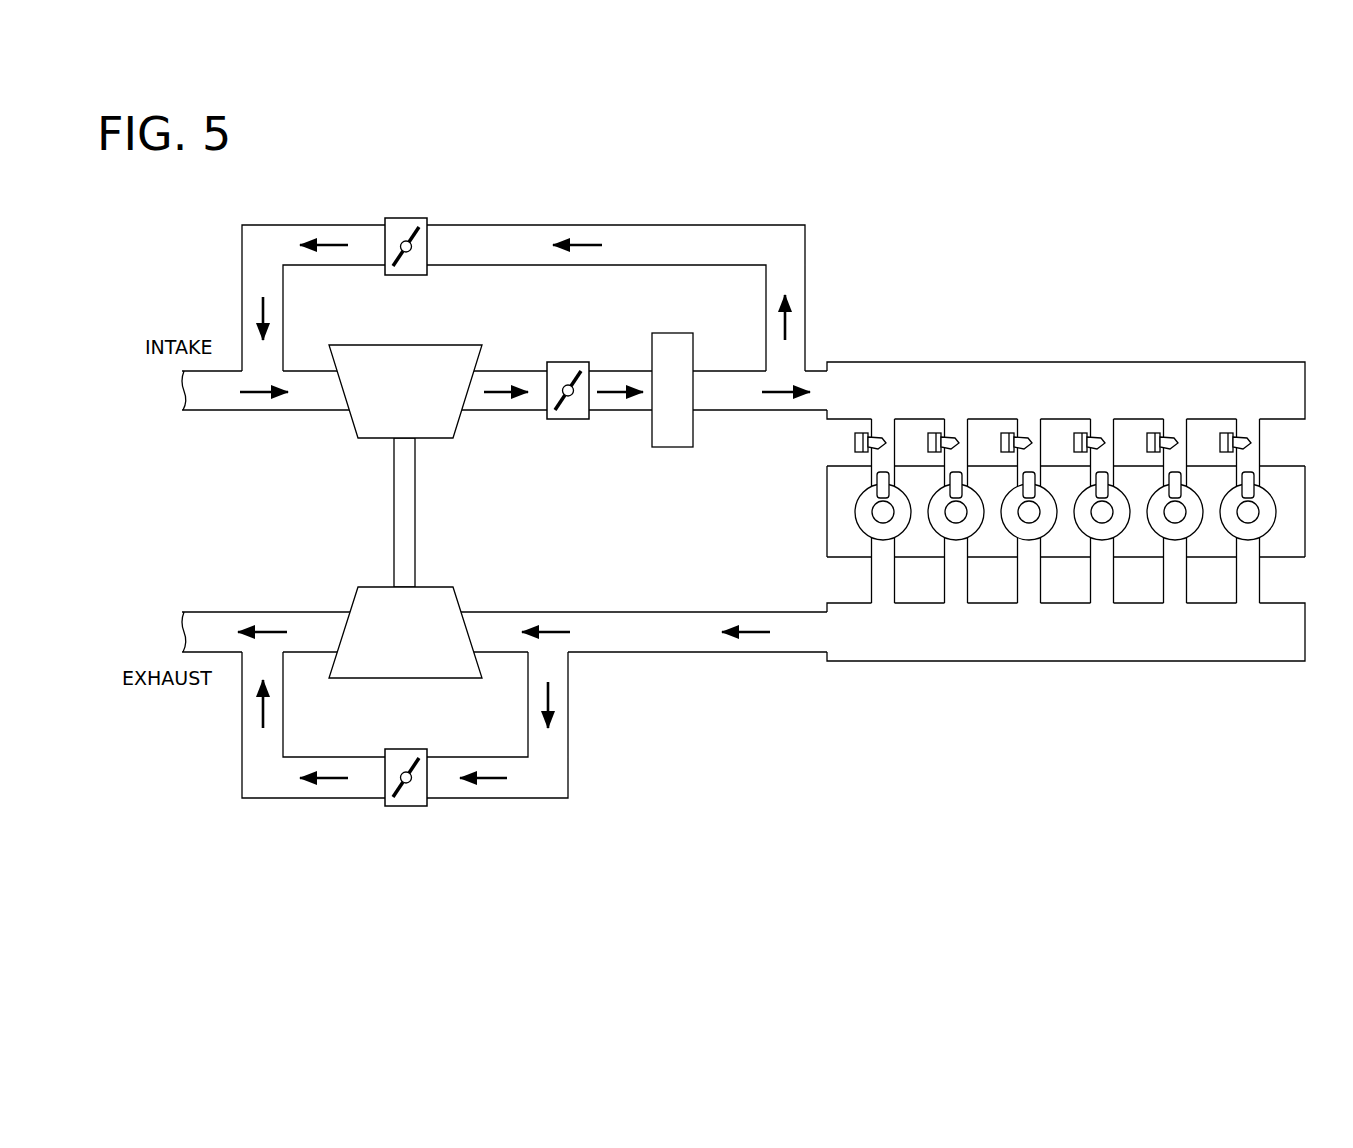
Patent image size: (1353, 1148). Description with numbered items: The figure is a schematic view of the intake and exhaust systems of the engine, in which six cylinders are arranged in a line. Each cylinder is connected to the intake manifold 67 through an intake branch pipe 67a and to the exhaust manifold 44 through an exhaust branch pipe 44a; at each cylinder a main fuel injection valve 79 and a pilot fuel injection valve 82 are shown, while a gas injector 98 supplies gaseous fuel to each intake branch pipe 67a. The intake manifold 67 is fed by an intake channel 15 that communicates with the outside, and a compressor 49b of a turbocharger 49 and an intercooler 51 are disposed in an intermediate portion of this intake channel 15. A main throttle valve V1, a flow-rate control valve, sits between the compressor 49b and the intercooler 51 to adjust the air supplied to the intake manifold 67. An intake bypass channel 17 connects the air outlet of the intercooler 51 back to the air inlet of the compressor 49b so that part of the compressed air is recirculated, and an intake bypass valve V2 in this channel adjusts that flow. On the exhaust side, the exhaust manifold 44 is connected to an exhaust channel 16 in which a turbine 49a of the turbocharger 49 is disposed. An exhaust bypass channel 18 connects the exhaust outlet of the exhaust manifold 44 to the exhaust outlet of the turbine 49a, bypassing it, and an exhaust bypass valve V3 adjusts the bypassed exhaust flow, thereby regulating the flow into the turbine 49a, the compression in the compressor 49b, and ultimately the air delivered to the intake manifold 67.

The intake channel 15 is at (711, 416).
The exhaust channel 16 is at (687, 658).
The intake bypass channel 17 is at (696, 232).
The exhaust bypass channel 18 is at (558, 773).
The exhaust manifold 44 is at (1060, 650).
The exhaust branch pipe 44a is at (883, 583).
The turbocharger 49 is at (252, 465).
The turbine 49a is at (367, 592).
The compressor 49b is at (368, 436).
The intercooler 51 is at (672, 447).
The intake manifold 67 is at (1058, 372).
The intake branch pipe 67a is at (887, 432).
The main fuel injection valve 79 is at (877, 520).
The pilot fuel injection valve 82 is at (876, 490).
The gas injector 98 is at (855, 445).
The main throttle valve V1 is at (570, 420).
The intake bypass valve V2 is at (405, 218).
The exhaust bypass valve V3 is at (405, 807).